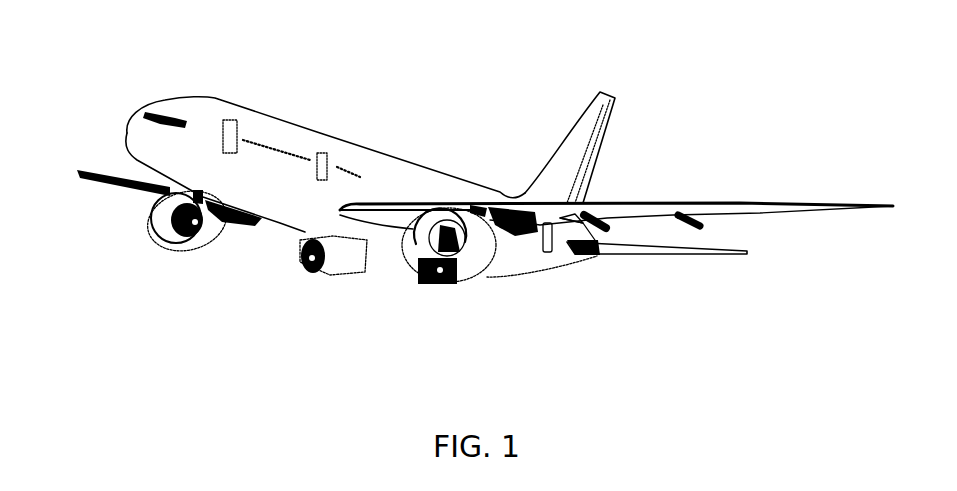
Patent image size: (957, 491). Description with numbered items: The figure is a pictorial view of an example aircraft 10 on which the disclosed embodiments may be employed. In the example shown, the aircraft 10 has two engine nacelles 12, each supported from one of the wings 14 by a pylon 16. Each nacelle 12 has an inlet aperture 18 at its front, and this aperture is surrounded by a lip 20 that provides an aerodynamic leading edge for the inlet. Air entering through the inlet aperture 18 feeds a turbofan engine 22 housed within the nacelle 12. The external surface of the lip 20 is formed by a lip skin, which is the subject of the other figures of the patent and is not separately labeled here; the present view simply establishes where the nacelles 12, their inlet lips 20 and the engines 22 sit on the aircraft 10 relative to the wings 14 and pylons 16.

The aircraft 10 is at (210, 97).
The engine nacelle 12 is at (207, 223).
The wing 14 is at (150, 187).
The pylon 16 is at (520, 237).
The inlet aperture 18 is at (160, 212).
The lip 20 is at (167, 227).
The turbofan engine 22 is at (440, 248).